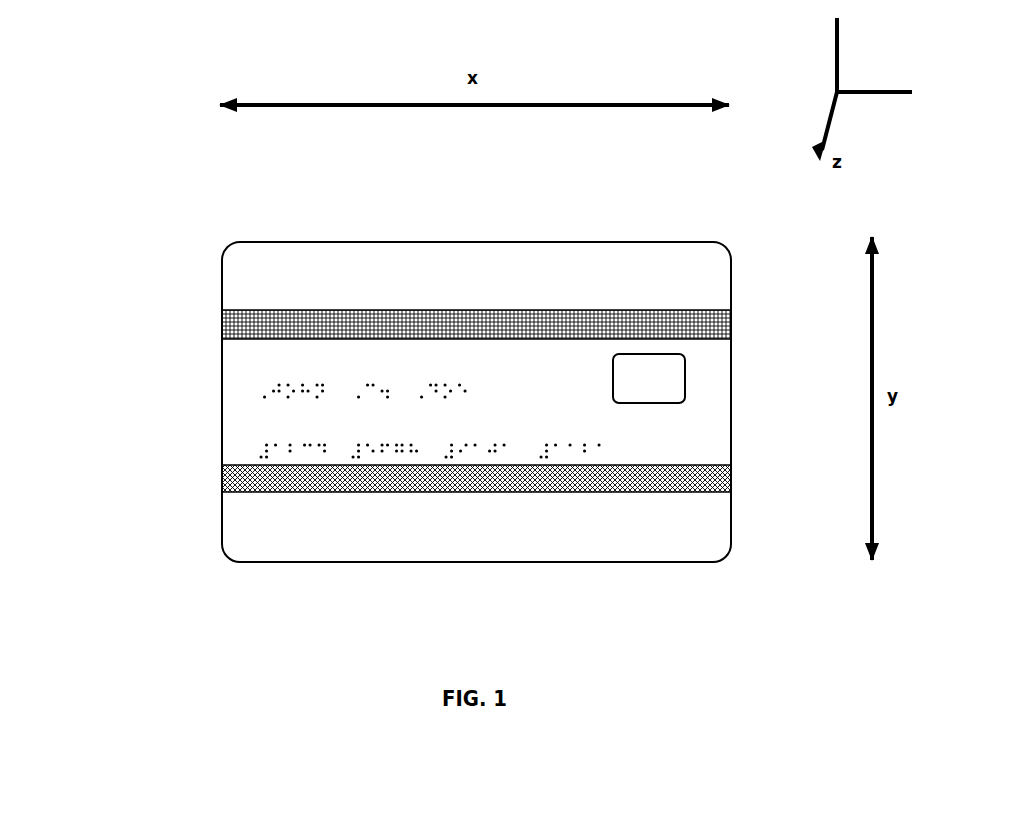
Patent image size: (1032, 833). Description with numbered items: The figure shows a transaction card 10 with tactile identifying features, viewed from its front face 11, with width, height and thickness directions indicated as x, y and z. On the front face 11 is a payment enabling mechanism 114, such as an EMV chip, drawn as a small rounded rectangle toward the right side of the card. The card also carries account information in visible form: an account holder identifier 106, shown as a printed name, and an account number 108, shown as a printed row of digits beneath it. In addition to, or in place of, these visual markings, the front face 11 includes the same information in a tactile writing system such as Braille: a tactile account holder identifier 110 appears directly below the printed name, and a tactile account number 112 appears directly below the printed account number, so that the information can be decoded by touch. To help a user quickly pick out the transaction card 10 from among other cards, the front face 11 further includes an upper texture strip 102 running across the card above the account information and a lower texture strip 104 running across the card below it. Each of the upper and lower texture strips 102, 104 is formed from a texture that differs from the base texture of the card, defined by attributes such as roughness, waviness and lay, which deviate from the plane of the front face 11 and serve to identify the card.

The transaction card 10 is at (313, 222).
The front face 11 is at (247, 273).
The upper texture strip 102 is at (221, 325).
The lower texture strip 104 is at (221, 478).
The account holder identifier 106 is at (249, 362).
The account number 108 is at (249, 425).
The tactile account holder identifier 110 is at (249, 390).
The tactile account number 112 is at (249, 453).
The payment enabling mechanism 114 is at (687, 380).